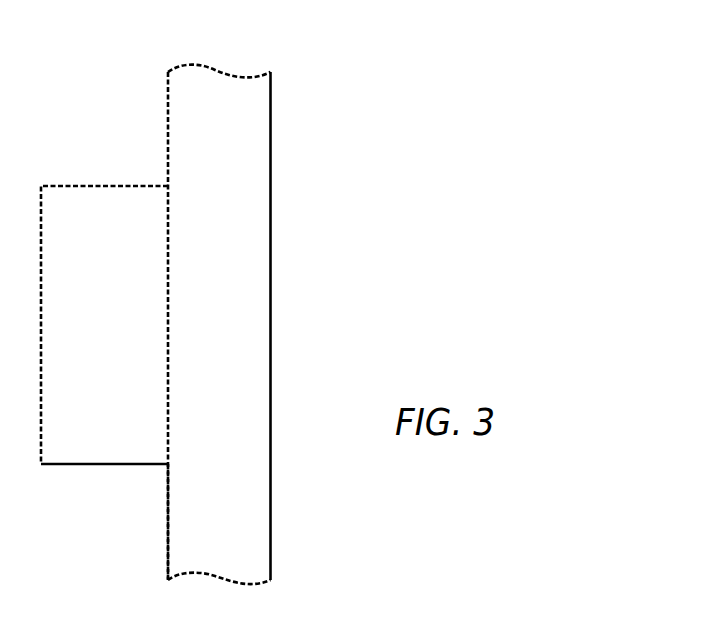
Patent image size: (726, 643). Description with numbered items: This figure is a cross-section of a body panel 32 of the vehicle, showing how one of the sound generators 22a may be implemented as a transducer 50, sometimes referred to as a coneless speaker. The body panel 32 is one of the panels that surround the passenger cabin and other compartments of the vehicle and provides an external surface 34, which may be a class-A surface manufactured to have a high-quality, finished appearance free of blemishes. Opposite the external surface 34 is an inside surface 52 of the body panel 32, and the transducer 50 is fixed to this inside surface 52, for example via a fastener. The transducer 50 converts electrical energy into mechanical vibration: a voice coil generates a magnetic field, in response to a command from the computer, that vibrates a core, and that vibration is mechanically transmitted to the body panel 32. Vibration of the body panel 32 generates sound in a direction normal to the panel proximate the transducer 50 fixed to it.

The first sound generator 22a is at (390, 178).
The body panel 32 is at (188, 146).
The external surface 34 is at (272, 310).
The transducer 50 is at (80, 465).
The inside surface 52 is at (168, 524).